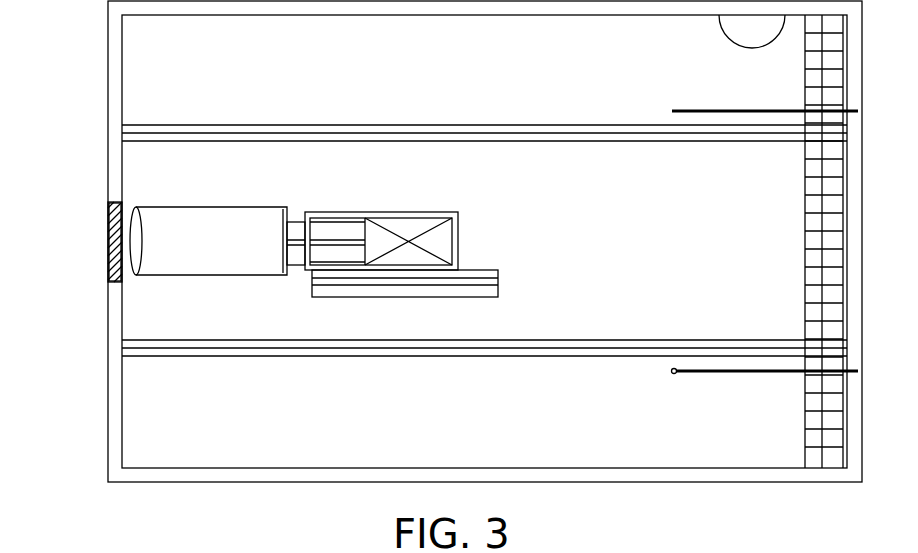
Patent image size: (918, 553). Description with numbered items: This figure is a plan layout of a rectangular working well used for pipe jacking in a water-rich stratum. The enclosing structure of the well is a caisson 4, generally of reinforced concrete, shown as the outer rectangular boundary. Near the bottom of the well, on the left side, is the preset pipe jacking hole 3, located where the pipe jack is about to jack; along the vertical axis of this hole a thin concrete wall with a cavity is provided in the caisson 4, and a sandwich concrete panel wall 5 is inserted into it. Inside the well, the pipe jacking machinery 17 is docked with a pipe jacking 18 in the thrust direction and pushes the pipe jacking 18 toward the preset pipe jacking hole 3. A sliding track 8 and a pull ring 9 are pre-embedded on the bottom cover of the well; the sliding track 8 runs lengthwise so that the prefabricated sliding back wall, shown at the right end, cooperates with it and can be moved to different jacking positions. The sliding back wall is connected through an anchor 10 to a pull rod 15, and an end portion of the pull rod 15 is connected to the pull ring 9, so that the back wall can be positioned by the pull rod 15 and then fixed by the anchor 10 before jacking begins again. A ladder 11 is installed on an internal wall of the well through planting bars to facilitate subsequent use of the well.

The preset pipe jacking hole 3 is at (110, 280).
The caisson 4 is at (115, 75).
The sandwich concrete panel wall 5 is at (110, 243).
The sliding track 8 is at (557, 130).
The pull ring 9 is at (675, 373).
The anchor 10 is at (817, 112).
The ladder 11 is at (722, 29).
The pull rod 15 is at (716, 373).
The pipe jacking machinery 17 is at (398, 228).
The pipe jacking 18 is at (200, 227).